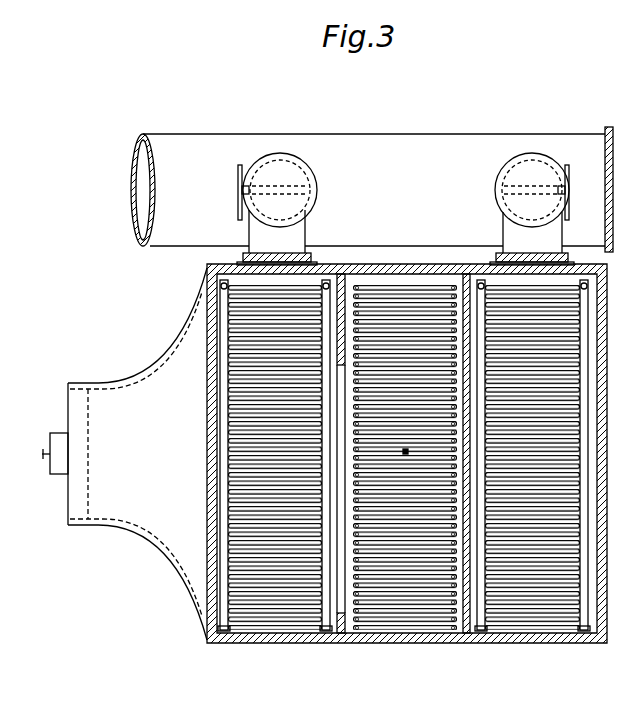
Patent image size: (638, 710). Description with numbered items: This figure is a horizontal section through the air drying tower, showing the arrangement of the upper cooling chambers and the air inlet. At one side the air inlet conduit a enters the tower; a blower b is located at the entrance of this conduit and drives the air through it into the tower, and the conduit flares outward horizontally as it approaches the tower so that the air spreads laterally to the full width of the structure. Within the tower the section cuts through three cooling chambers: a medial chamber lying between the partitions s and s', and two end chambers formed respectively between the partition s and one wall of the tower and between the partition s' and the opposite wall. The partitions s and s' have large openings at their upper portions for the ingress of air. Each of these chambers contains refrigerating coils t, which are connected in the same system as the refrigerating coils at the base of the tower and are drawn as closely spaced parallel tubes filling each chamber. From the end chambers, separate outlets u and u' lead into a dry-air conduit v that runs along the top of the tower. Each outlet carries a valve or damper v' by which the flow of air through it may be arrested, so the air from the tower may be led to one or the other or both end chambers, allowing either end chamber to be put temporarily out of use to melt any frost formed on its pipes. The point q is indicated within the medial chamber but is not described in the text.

The air inlet conduit a is at (166, 547).
The blower b is at (62, 477).
The point q is at (408, 452).
The partition s is at (235, 482).
The partition s' is at (484, 482).
The refrigerating coils t is at (305, 628).
The outlet u is at (277, 183).
The outlet u' is at (532, 181).
The dry-air conduit v is at (372, 178).
The valve or damper v' is at (422, 182).